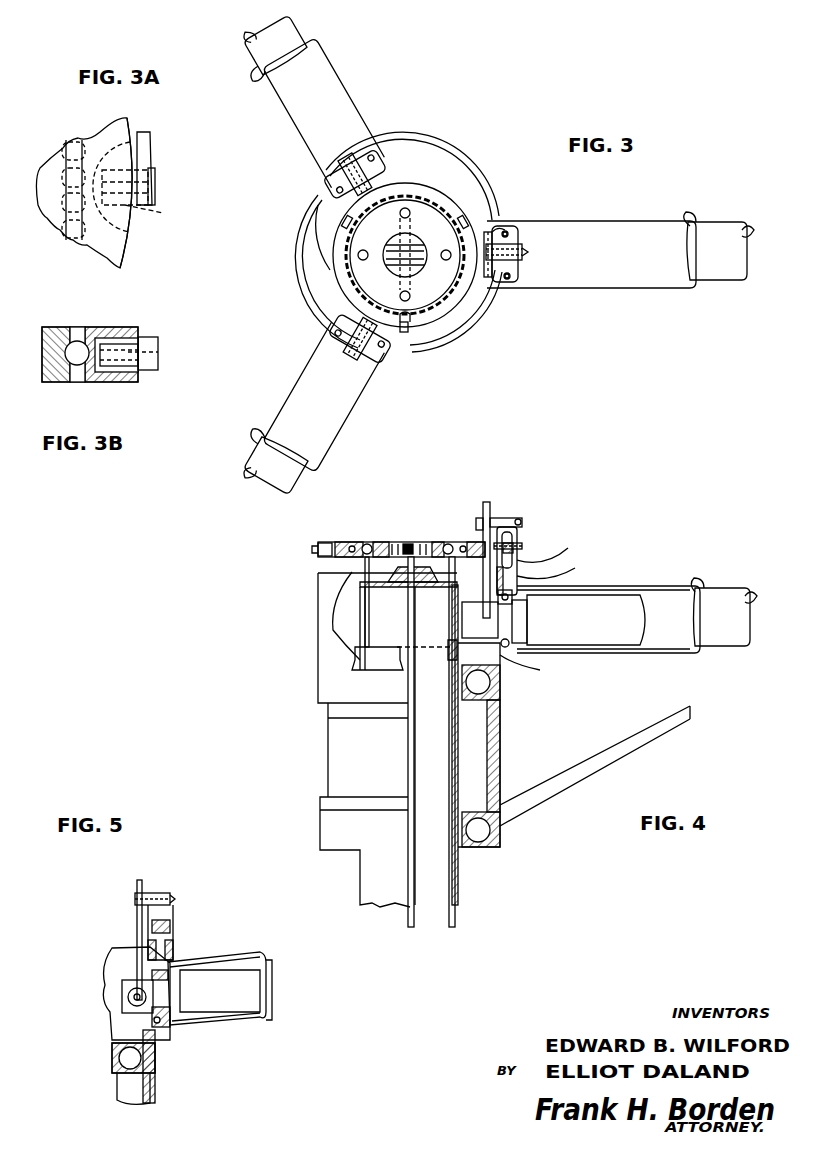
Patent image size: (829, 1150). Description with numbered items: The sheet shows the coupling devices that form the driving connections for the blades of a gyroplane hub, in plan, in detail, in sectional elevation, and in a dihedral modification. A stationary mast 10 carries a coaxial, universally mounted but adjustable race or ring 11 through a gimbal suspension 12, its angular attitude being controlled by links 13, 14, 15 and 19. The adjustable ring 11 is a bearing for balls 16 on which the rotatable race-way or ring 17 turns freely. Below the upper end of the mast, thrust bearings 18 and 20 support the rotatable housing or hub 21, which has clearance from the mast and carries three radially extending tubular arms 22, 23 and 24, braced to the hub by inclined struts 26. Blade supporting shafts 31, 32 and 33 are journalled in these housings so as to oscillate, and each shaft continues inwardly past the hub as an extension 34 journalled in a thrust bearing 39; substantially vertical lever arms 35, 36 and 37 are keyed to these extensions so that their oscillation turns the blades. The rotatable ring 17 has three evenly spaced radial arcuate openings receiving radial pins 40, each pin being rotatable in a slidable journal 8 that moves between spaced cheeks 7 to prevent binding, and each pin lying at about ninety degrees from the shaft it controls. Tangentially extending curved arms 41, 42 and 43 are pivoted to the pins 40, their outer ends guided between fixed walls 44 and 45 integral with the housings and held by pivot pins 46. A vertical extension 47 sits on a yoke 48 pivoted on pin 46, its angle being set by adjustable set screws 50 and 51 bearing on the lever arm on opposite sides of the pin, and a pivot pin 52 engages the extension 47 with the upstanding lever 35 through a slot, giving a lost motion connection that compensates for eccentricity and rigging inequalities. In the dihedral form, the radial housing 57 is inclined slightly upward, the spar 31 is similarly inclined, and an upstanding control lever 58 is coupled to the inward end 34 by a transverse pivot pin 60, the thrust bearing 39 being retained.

In FIG. 3A, the spaced cheeks 7 is at (130, 220).
In FIG. 3B, the spaced cheeks 7 is at (120, 327).
In FIG. 3A, the slidable journal 8 is at (154, 215).
In FIG. 3B, the slidable journal 8 is at (140, 344).
In FIG. 4, the stationary mast 10 is at (465, 872).
In FIG. 3A, the stationary adjustable race or ring 11 is at (42, 220).
In FIG. 4, the stationary adjustable race or ring 11 is at (448, 543).
In FIG. 4, the gimbal suspension 12 is at (409, 543).
In FIG. 3, the link 13 is at (364, 250).
In FIG. 4, the link 13 is at (372, 605).
In FIG. 3, the link 14 is at (411, 216).
In FIG. 4, the link 14 is at (412, 625).
In FIG. 3, the link 15 is at (448, 261).
In FIG. 4, the link 15 is at (447, 655).
In FIG. 3B, the balls 16 is at (82, 328).
In FIG. 4, the balls 16 is at (366, 543).
In FIG. 3, the rotatable race-way or ring 17 is at (449, 322).
In FIG. 3A, the rotatable race-way or ring 17 is at (130, 246).
In FIG. 3B, the rotatable race-way or ring 17 is at (88, 382).
In FIG. 4, the rotatable race-way or ring 17 is at (340, 543).
In FIG. 4, the thrust bearing 18 is at (490, 682).
In FIG. 3, the link 19 is at (400, 296).
In FIG. 4, the thrust bearing 20 is at (488, 838).
In FIG. 4, the rotatable housing or hub 21 is at (497, 766).
In FIG. 5, the rotatable housing or hub 21 is at (156, 1085).
In FIG. 3, the radially extending tubular arm 22 is at (632, 290).
In FIG. 4, the radially extending tubular arm 22 is at (666, 589).
In FIG. 3, the radially extending tubular arm 23 is at (345, 98).
In FIG. 3, the radially extending tubular arm 24 is at (285, 386).
In FIG. 4, the inclined vertically disposed strut 26 is at (650, 746).
In FIG. 3, the blade supporting shaft 31 is at (720, 232).
In FIG. 4, the blade supporting shaft 31 is at (602, 596).
In FIG. 5, the blade supporting shaft 31 is at (236, 1012).
In FIG. 3, the blade supporting shaft 32 is at (303, 36).
In FIG. 3, the blade supporting shaft 33 is at (260, 470).
In FIG. 4, the shaft extension 34 is at (520, 672).
In FIG. 5, the shaft extension 34 is at (120, 1004).
In FIG. 3, the lever arm 35 is at (496, 230).
In FIG. 4, the lever arm 35 is at (488, 500).
In FIG. 3, the lever arm 36 is at (320, 216).
In FIG. 3, the lever arm 37 is at (402, 355).
In FIG. 4, the thrust bearing 39 is at (512, 652).
In FIG. 5, the thrust bearing 39 is at (168, 1026).
In FIG. 3, the radial pin 40 is at (481, 214).
In FIG. 3A, the radial pin 40 is at (155, 188).
In FIG. 3B, the radial pin 40 is at (160, 353).
In FIG. 3, the curved arm 41 is at (492, 310).
In FIG. 4, the curved arm 41 is at (518, 580).
In FIG. 3, the curved arm 42 is at (416, 153).
In FIG. 3A, the curved arm 42 is at (150, 140).
In FIG. 3B, the curved arm 42 is at (158, 345).
In FIG. 3, the curved arm 43 is at (306, 298).
In FIG. 4, the curved arm 43 is at (318, 549).
In FIG. 4, the wall 44 is at (576, 568).
In FIG. 4, the wall 45 is at (570, 548).
In FIG. 3, the pivot pin 46 is at (350, 160).
In FIG. 4, the pivot pin 46 is at (524, 548).
In FIG. 3, the vertical extension 47 is at (368, 150).
In FIG. 4, the vertical extension 47 is at (507, 518).
In FIG. 4, the yoke 48 is at (516, 532).
In FIG. 3, the adjustable set screw 50 is at (515, 275).
In FIG. 4, the adjustable set screw 50 is at (520, 518).
In FIG. 3, the adjustable set screw 51 is at (512, 235).
In FIG. 3, the pivot pin 52 is at (362, 186).
In FIG. 4, the pivot pin 52 is at (478, 520).
In FIG. 5, the radial housing 57 is at (210, 956).
In FIG. 5, the upstanding control lever 58 is at (145, 886).
In FIG. 5, the transverse pivot pin 60 is at (130, 990).